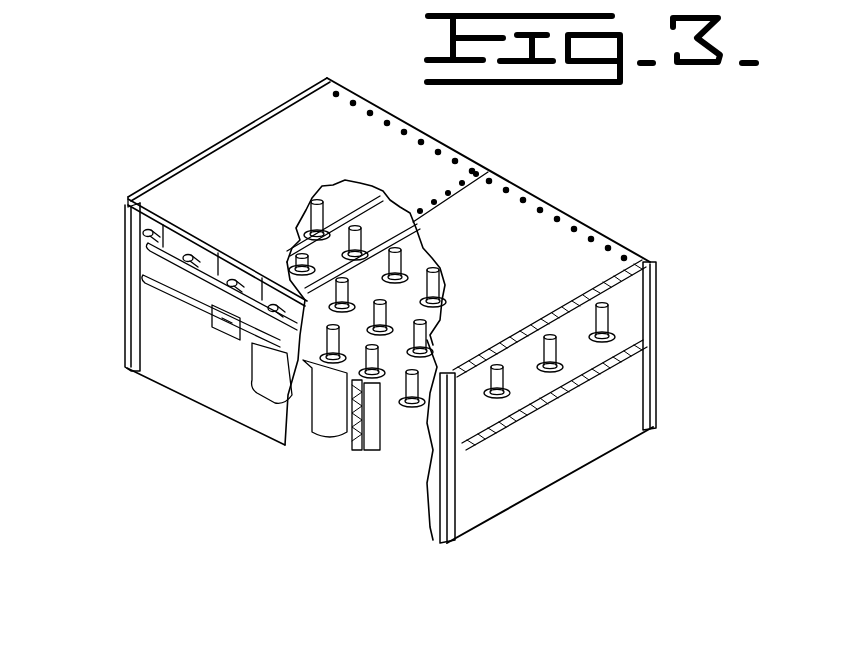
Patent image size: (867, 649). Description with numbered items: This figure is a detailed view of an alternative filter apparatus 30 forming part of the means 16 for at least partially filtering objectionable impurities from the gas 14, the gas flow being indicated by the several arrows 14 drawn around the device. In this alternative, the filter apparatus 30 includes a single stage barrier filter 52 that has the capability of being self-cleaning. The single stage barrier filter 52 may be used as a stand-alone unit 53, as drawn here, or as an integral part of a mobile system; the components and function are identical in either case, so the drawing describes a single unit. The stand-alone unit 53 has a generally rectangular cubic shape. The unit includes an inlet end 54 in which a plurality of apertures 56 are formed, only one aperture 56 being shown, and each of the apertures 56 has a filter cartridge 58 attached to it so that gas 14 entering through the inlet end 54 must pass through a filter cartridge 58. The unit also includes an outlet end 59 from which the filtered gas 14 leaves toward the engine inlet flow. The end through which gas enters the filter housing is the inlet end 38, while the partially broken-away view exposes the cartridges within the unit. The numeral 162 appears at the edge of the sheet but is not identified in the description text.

The contact pins 14 is at (181, 435).
The connector housing 16 is at (117, 491).
The mounting direction / base 30 is at (217, 564).
The cover shell 38 is at (215, 142).
The front wall 52 is at (565, 477).
The side post 53 is at (93, 291).
The insulating body 54 is at (313, 462).
The retaining strip 56 is at (365, 455).
The broken-away housing portion 58 is at (417, 442).
The top rim 59 is at (623, 312).
The contact pin 162 is at (771, 640).